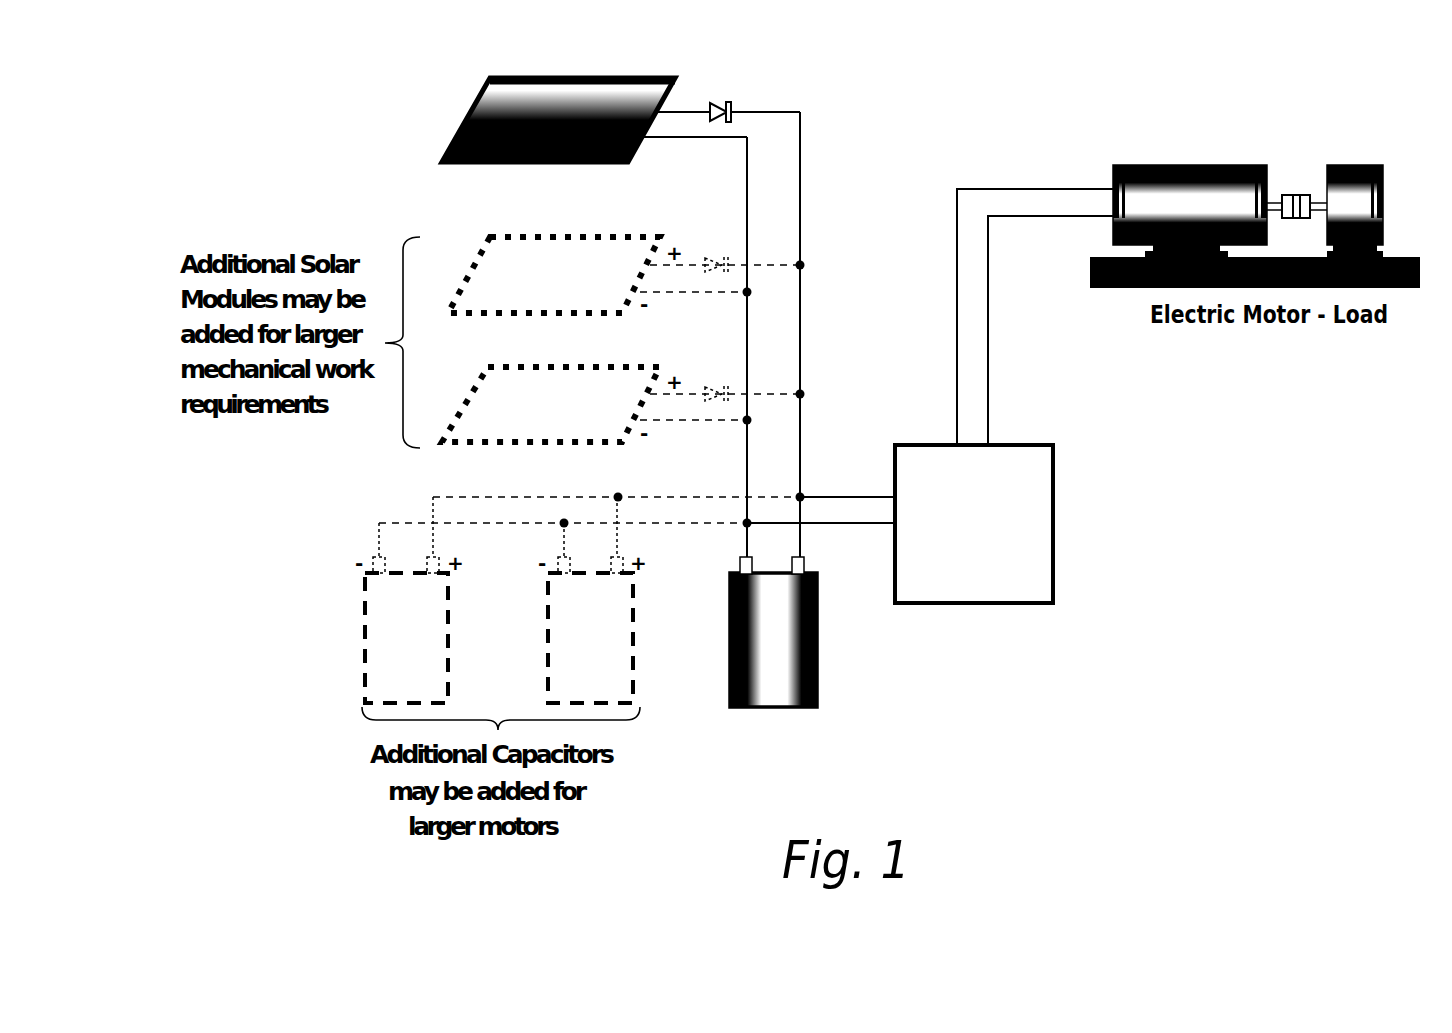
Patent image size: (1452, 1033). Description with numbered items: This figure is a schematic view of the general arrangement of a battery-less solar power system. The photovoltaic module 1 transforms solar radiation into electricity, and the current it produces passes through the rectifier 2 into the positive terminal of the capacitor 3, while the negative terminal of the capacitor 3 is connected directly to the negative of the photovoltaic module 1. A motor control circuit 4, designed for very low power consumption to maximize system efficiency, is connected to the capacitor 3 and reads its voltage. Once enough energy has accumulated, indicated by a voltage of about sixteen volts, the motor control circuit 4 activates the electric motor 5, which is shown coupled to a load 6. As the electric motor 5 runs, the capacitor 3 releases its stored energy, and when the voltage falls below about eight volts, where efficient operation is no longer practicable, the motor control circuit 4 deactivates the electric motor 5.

The photovoltaic module 1 is at (441, 120).
The rectifier 2 is at (759, 90).
The capacitor 3 is at (798, 665).
The motor control circuit 4 is at (974, 524).
The electric motor 5 is at (1212, 168).
The load 6 is at (1355, 173).